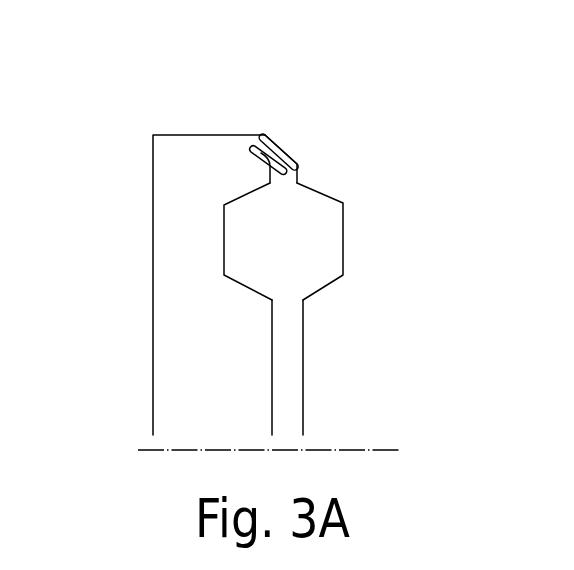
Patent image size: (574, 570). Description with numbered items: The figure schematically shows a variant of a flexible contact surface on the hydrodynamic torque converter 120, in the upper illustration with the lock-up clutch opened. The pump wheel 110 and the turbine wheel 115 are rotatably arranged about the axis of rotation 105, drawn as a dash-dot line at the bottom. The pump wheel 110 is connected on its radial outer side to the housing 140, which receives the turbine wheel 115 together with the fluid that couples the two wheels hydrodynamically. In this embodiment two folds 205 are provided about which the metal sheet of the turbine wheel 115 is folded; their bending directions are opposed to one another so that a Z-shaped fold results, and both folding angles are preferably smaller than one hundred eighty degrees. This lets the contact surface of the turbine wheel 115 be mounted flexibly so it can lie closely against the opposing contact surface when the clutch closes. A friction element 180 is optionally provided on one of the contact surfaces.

The axis of rotation 105 is at (386, 450).
The pump wheel 110 is at (308, 335).
The turbine wheel 115 is at (250, 251).
The hydrodynamic torque converter 120 is at (391, 89).
The housing 140 is at (152, 191).
The friction element 180 is at (277, 146).
The folds 205 is at (247, 146).